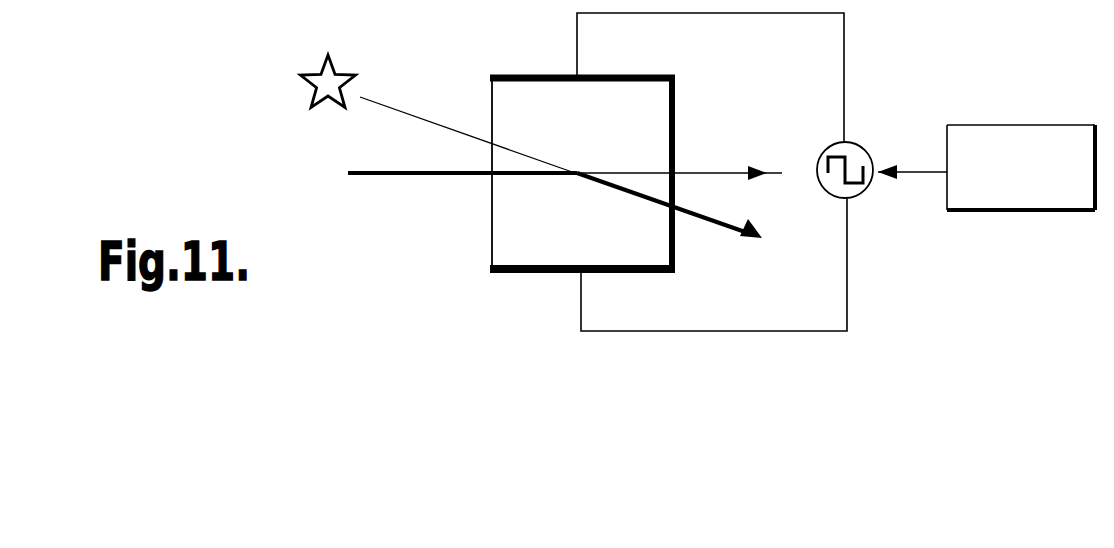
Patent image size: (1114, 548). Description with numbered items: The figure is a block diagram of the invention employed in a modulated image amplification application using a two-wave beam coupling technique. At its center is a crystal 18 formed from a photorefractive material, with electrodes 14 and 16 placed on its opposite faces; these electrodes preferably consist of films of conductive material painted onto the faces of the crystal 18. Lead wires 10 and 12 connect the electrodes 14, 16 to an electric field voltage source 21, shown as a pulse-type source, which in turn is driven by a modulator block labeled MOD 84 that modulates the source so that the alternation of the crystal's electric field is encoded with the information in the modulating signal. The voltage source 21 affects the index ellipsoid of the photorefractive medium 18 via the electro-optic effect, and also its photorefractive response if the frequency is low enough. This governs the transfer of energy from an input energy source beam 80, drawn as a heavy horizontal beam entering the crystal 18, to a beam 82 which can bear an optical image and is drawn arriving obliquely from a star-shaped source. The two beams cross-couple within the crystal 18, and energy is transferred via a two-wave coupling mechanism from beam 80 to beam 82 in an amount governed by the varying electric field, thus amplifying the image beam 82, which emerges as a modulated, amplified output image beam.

The lead wire 10 is at (765, 13).
The lead wire 12 is at (753, 330).
The electrode 14 is at (518, 75).
The electrode 16 is at (518, 273).
The crystal 18 is at (493, 218).
The electric field voltage source 21 is at (896, 148).
The input energy source beam 80 is at (370, 173).
The image beam 82 is at (418, 115).
The modulator (MOD) 84 is at (1055, 212).